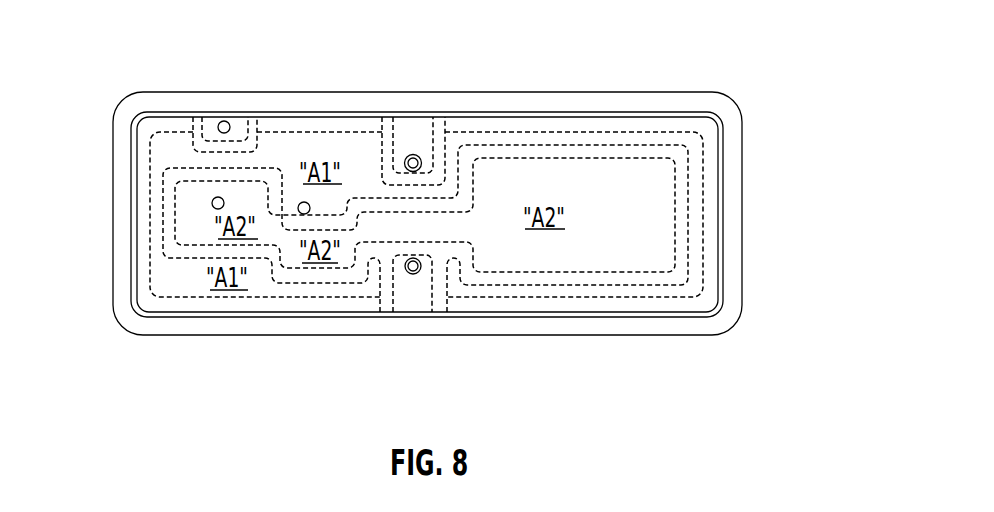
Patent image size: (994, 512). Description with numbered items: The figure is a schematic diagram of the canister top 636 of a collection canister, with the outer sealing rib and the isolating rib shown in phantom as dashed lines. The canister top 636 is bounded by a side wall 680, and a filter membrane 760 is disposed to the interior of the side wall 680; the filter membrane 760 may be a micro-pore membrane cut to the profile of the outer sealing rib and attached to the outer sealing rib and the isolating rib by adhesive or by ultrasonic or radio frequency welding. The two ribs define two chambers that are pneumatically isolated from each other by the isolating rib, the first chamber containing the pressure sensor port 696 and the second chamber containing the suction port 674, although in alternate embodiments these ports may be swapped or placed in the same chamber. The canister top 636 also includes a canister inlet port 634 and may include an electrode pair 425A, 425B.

The canister top 636 is at (648, 57).
The side wall 680 is at (726, 221).
The filter membrane 760 is at (648, 193).
The canister inlet port 634 is at (221, 118).
The pressure sensor port 696 is at (300, 198).
The suction port 674 is at (211, 203).
The electrode 425A is at (414, 153).
The electrode 425B is at (416, 276).